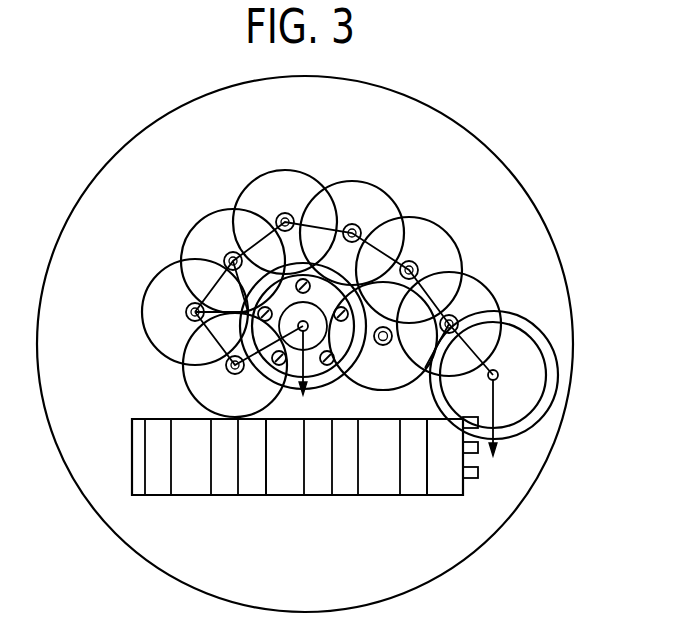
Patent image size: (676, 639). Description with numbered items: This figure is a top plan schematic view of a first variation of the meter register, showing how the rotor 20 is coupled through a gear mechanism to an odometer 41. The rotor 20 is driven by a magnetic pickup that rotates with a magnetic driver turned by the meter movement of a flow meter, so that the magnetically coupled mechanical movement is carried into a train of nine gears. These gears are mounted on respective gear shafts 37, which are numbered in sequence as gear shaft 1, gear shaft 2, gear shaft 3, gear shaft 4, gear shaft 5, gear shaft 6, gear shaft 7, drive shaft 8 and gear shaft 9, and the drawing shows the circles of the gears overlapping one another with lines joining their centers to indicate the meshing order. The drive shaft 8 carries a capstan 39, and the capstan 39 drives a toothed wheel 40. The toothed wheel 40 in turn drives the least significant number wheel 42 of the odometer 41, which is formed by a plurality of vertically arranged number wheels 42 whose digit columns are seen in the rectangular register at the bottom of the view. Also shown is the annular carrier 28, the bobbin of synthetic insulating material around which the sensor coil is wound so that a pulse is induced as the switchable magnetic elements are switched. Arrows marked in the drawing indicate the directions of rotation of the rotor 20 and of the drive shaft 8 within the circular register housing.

The gear shaft 1 is at (235, 365).
The gear shaft 2 is at (195, 312).
The gear shaft 3 is at (233, 261).
The gear shaft 4 is at (285, 222).
The gear shaft 5 is at (352, 233).
The gear shaft 6 is at (409, 270).
The gear shaft 7 is at (449, 324).
The drive shaft 8 is at (493, 408).
The gear shaft 9 is at (383, 338).
The rotor 20 is at (320, 372).
The annular carrier 28 is at (262, 405).
The gear shafts 37 is at (526, 315).
The capstan 39 is at (463, 495).
The toothed wheel 40 is at (443, 497).
The odometer 41 is at (285, 516).
The number wheels 42 is at (413, 497).